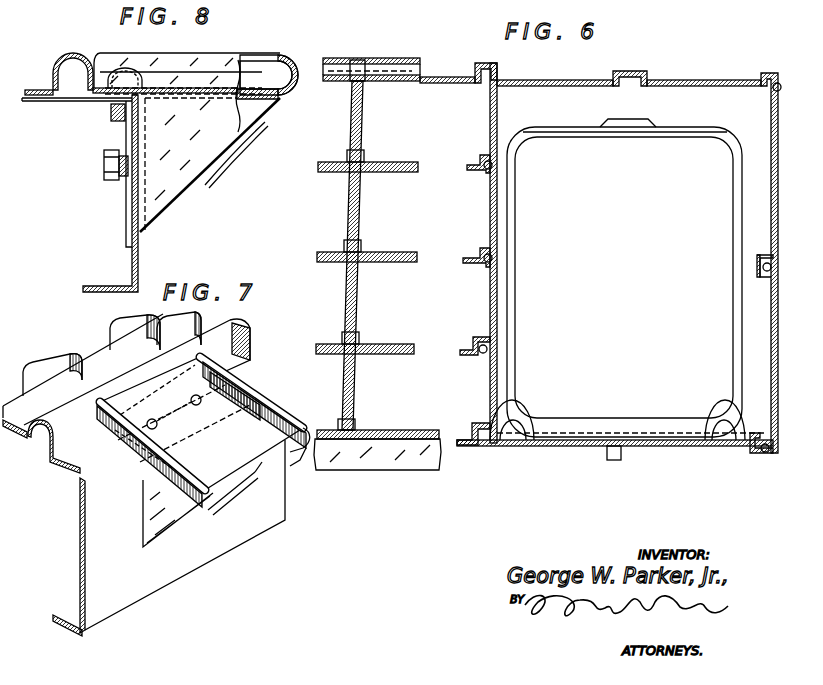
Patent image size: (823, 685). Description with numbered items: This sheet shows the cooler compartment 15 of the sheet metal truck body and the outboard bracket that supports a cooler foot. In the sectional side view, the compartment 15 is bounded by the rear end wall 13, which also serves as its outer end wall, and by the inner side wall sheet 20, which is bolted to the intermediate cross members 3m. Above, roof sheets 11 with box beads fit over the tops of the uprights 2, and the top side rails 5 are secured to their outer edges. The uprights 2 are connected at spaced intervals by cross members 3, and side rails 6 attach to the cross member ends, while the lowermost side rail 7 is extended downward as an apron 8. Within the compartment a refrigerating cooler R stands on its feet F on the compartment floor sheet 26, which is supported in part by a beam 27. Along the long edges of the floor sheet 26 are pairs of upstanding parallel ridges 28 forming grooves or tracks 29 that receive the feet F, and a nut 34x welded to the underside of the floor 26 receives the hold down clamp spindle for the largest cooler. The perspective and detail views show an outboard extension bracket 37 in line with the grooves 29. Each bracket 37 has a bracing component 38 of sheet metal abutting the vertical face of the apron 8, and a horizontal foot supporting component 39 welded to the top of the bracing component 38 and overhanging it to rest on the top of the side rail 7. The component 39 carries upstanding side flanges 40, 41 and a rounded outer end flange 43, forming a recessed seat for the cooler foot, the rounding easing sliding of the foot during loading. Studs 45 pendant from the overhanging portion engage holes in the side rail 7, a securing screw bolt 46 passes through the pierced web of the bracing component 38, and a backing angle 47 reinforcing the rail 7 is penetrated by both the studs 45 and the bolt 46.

In FIG. 6, the uprights 2 is at (348, 211).
In FIG. 6, the cross members 3 is at (364, 152).
In FIG. 6, the intermediate cross members 3m is at (478, 158).
In FIG. 6, the top side rails 5 is at (385, 58).
In FIG. 6, the side rails 6 is at (399, 172).
In FIG. 8, the lowermost side rail 7 is at (32, 89).
In FIG. 7, the lowermost side rail 7 is at (50, 468).
In FIG. 6, the lowermost side rail 7 is at (401, 430).
In FIG. 8, the apron 8 is at (131, 258).
In FIG. 7, the apron 8 is at (80, 567).
In FIG. 6, the apron 8 is at (392, 462).
In FIG. 6, the roof sheets 11 is at (444, 76).
In FIG. 6, the rear end wall 13 is at (773, 140).
In FIG. 6, the compartment 15 is at (714, 103).
In FIG. 6, the inner side wall sheet 20 is at (488, 215).
In FIG. 7, the compartment floor sheet 26 is at (182, 333).
In FIG. 6, the compartment floor sheet 26 is at (555, 448).
In FIG. 6, the beam 27 is at (622, 455).
In FIG. 7, the upstanding parallel ridges 28 is at (133, 345).
In FIG. 6, the upstanding parallel ridges 28 is at (536, 427).
In FIG. 7, the grooves or tracks 29 is at (82, 358).
In FIG. 6, the nut 34x is at (607, 462).
In FIG. 8, the outboard extension bracket 37 is at (238, 130).
In FIG. 7, the outboard extension bracket 37 is at (215, 499).
In FIG. 8, the bracing component 38 is at (173, 183).
In FIG. 7, the bracing component 38 is at (142, 526).
In FIG. 7, the horizontal foot supporting component 39 is at (284, 395).
In FIG. 8, the side flange 40 is at (178, 62).
In FIG. 7, the side flange 40 is at (160, 455).
In FIG. 8, the side flange 41 is at (254, 68).
In FIG. 7, the side flange 41 is at (245, 392).
In FIG. 8, the outer end flange 43 is at (290, 84).
In FIG. 7, the outer end flange 43 is at (237, 454).
In FIG. 8, the studs 45 is at (112, 114).
In FIG. 7, the studs 45 is at (195, 404).
In FIG. 8, the securing screw bolt 46 is at (100, 167).
In FIG. 8, the backing angle 47 is at (60, 102).
In FIG. 6, the refrigerating cooler R is at (624, 278).
In FIG. 6, the feet F is at (610, 471).